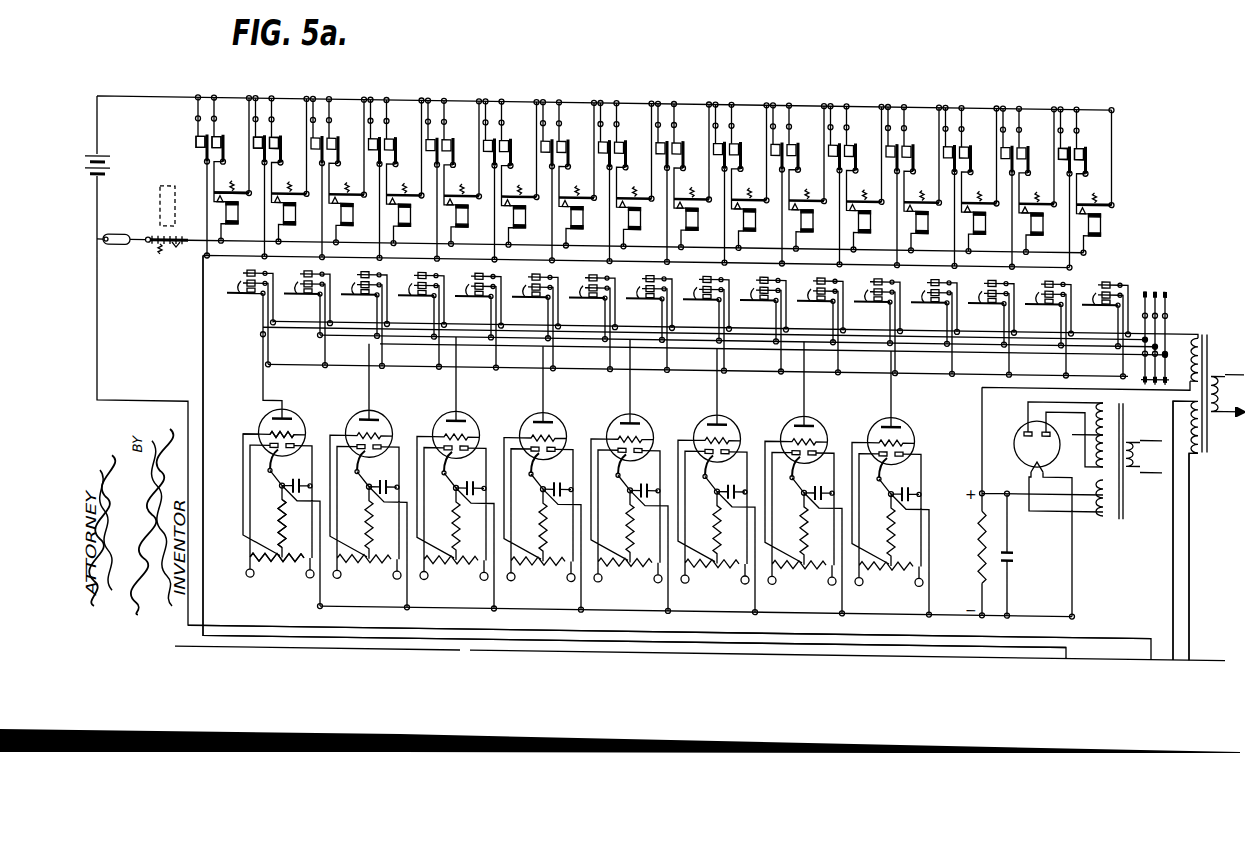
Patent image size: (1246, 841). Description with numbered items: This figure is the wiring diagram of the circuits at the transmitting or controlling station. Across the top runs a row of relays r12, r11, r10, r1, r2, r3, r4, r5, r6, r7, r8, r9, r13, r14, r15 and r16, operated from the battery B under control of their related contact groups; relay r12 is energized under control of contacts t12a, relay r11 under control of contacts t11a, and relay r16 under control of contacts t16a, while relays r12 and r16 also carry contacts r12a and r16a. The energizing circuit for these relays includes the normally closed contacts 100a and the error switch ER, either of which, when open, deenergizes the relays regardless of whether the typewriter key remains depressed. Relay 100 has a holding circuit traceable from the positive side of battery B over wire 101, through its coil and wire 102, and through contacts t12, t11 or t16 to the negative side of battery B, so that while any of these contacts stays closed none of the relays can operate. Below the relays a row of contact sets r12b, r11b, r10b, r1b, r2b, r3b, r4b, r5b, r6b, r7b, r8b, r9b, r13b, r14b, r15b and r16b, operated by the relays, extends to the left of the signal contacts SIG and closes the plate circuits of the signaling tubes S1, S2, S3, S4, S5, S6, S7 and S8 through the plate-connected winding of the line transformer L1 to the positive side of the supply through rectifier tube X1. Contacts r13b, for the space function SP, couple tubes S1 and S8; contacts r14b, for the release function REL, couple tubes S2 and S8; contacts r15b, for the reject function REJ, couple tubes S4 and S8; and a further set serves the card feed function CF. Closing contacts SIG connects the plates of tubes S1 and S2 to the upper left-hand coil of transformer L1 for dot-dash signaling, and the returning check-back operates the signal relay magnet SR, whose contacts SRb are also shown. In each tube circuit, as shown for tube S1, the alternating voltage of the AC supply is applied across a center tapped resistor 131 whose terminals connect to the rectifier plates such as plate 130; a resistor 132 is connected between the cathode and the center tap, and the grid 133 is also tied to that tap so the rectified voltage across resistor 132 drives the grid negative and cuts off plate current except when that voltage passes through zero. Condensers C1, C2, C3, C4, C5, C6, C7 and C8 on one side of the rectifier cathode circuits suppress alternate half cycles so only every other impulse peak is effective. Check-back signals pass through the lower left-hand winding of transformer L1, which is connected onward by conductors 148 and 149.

The battery B is at (101, 156).
The error switch ER is at (122, 245).
The relay 100 is at (158, 209).
The normally closed contacts 100a is at (176, 247).
The wire 101 is at (97, 315).
The wire 102 is at (203, 342).
The contacts t12 is at (194, 130).
The contacts t12a is at (218, 133).
The contacts t11 is at (259, 133).
The contacts t11a is at (276, 133).
The transfer contact of relay r16 t16 is at (1062, 133).
The transfer contact of relay r16 t16a is at (1081, 133).
The relay r12 is at (238, 208).
The relay r11 is at (296, 208).
The relay r10 is at (353, 208).
The relay r1 is at (410, 208).
The relay r2 is at (468, 208).
The relay r3 is at (526, 208).
The relay r4 is at (583, 208).
The relay r5 is at (640, 208).
The relay r6 is at (698, 208).
The relay r7 is at (756, 208).
The relay r8 is at (813, 208).
The relay r9 is at (870, 208).
The magnet r13 is at (928, 208).
The relay r14 is at (986, 208).
The relay r15 is at (1043, 208).
The relay r16 is at (1100, 208).
The relay armature contact r12a is at (231, 181).
The relay armature contact r16a is at (1088, 188).
The relay contact set r12b is at (251, 318).
The relay contact set r11b is at (308, 319).
The relay contact set r10b is at (365, 319).
The relay contact set r1b is at (422, 320).
The relay contact set r2b is at (479, 321).
The relay contact set r3b is at (536, 322).
The relay contact set r4b is at (593, 323).
The relay contact set r5b is at (650, 323).
The relay contact set r6b is at (707, 324).
The relay contact set r7b is at (764, 325).
The relay contact set r8b is at (821, 326).
The relay contact set r9b is at (878, 327).
The contacts r13b is at (935, 327).
The contacts r14b is at (992, 328).
The contacts r15b is at (1049, 329).
The relay contact set r16b is at (1106, 330).
The space magnet SP is at (929, 270).
The release key REL is at (985, 271).
The card feed key CF is at (1046, 272).
The reject magnet REJ is at (1099, 273).
The signal contacts SIG is at (1154, 327).
The signal relay magnet SR is at (1144, 364).
The signal relay contact SRb is at (1156, 370).
The signaling tube S1 is at (289, 418).
The signaling tube S2 is at (376, 418).
The signaling tube S3 is at (463, 418).
The signaling tube S4 is at (550, 418).
The signaling tube S5 is at (637, 418).
The signaling tube S6 is at (724, 418).
The signaling tube S7 is at (811, 418).
The signaling tube S8 is at (898, 418).
The condenser C1 is at (296, 480).
The condenser C2 is at (383, 480).
The condenser C3 is at (470, 480).
The condenser C4 is at (557, 480).
The condenser C5 is at (644, 480).
The condenser C6 is at (731, 480).
The condenser C7 is at (818, 480).
The condenser C8 is at (905, 480).
The grid 133 is at (268, 428).
The rectifier plate 130 is at (257, 435).
The resistor 132 is at (281, 512).
The center tapped resistor 131 is at (280, 560).
The rectifier tube X1 is at (1025, 432).
The A. C. supply AC is at (1192, 424).
The line transformer L1 is at (1207, 373).
The conductor 148 is at (1173, 540).
The conductor 149 is at (1189, 584).